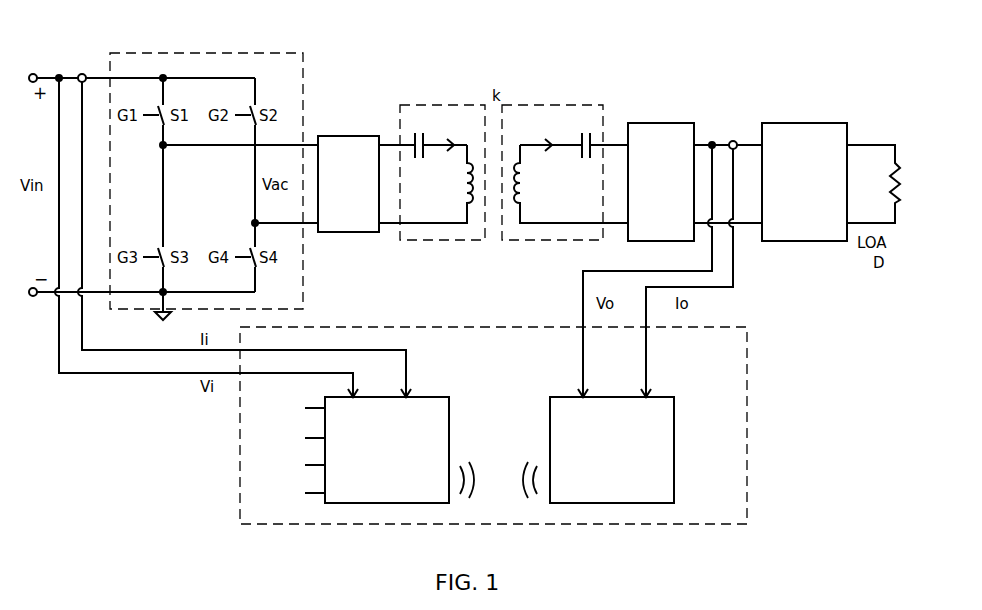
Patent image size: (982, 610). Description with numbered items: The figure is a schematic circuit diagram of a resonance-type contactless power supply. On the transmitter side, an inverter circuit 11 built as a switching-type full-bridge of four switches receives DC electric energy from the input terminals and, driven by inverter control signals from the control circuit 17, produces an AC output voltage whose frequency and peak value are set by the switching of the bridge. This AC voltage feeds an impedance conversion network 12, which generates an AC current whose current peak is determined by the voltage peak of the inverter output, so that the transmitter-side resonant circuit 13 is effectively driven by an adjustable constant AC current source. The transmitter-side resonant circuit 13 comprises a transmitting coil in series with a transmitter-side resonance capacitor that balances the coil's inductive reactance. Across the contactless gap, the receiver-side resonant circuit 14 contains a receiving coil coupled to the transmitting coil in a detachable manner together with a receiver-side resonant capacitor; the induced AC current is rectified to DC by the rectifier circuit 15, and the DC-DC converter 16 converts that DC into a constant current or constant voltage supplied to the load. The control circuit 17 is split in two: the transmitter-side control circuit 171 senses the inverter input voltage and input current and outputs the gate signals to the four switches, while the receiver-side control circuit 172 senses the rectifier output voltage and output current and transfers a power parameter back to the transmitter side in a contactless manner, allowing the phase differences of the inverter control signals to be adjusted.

The inverter circuit 11 is at (248, 53).
The impedance conversion network 12 is at (340, 136).
The transmitter-side resonant circuit 13 is at (428, 105).
The receiver-side resonant circuit 14 is at (568, 105).
The rectifier circuit 15 is at (680, 123).
The DC-DC converter 16 is at (775, 123).
The control circuit 17 is at (747, 387).
The transmitter-side control circuit 171 is at (422, 397).
The receiver-side control circuit 172 is at (674, 432).